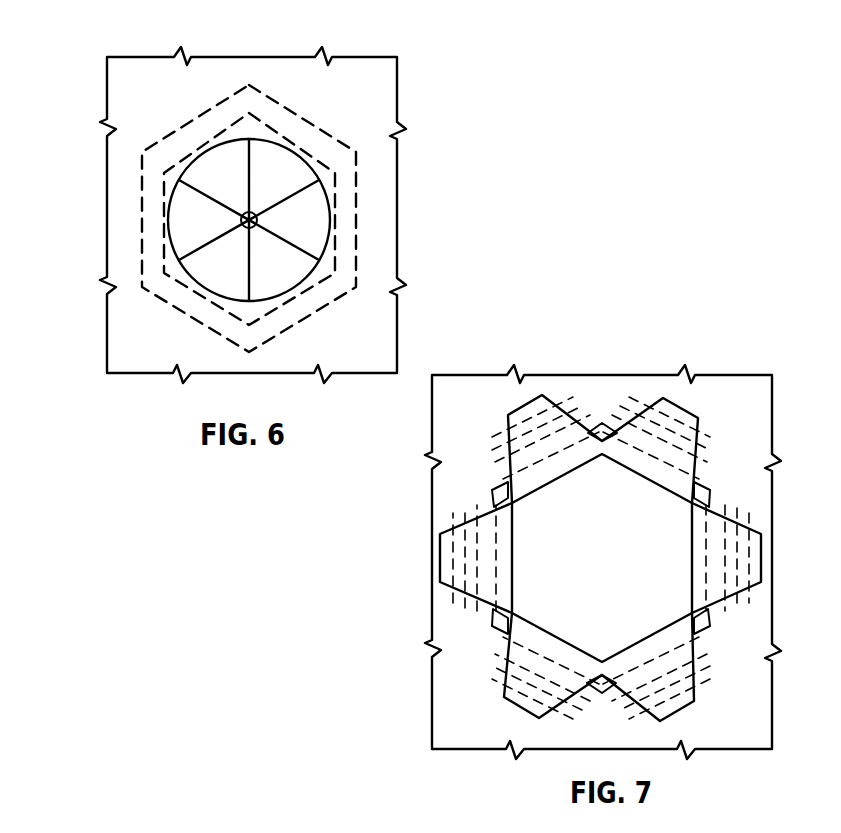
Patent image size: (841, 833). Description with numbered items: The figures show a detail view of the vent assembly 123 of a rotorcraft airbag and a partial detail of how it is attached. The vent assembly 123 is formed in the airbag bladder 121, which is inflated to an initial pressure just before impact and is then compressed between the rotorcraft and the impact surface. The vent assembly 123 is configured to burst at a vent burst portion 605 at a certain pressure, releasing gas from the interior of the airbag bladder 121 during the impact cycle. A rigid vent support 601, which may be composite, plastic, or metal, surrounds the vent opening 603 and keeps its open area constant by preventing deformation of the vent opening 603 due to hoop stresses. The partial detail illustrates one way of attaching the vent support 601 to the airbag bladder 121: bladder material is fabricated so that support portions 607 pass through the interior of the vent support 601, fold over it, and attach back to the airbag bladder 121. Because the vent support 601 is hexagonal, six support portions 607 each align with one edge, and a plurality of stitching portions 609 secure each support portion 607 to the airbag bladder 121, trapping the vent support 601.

In FIG. 6, the airbag bladder 121 is at (377, 130).
In FIG. 7, the airbag bladder 121 is at (453, 712).
In FIG. 6, the vent assembly 123 is at (140, 178).
In FIG. 6, the vent support 601 is at (345, 237).
In FIG. 7, the vent support 601 is at (547, 519).
In FIG. 6, the vent opening 603 is at (253, 140).
In FIG. 6, the vent burst portion 605 is at (215, 247).
In FIG. 7, the support portion 607 is at (446, 582).
In FIG. 7, the stitching portion 609 is at (453, 518).